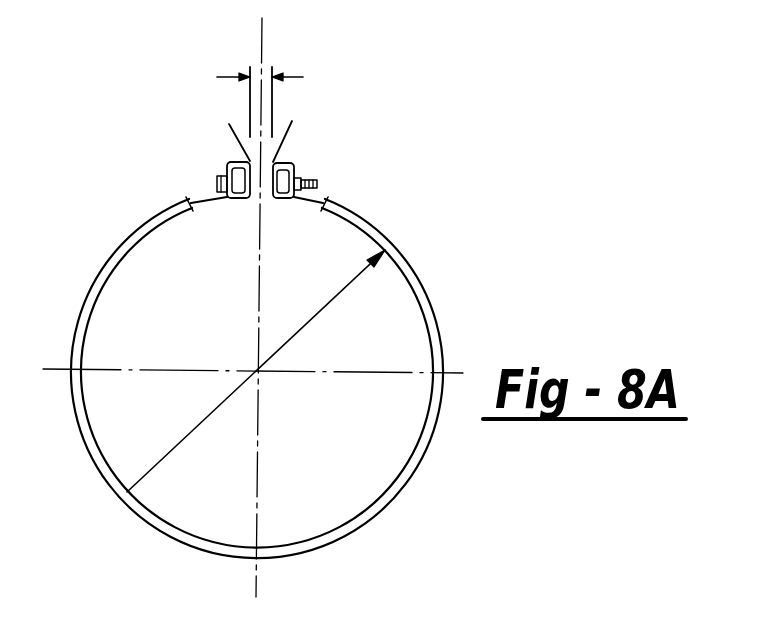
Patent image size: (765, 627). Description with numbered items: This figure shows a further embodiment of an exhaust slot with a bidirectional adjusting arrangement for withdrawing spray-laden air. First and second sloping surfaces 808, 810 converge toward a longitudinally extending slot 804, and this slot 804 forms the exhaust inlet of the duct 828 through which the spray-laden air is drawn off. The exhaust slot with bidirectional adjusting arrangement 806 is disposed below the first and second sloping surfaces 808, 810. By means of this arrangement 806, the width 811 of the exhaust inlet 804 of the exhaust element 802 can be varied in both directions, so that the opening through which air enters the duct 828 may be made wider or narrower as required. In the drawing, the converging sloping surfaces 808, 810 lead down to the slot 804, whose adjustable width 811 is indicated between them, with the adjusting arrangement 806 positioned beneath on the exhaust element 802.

The exhaust element 802 is at (422, 236).
The duct 828 is at (460, 304).
The longitudinally extending slot 804 is at (217, 166).
The exhaust slot with bidirectional adjusting arrangement 806 is at (338, 172).
The first sloping surface 808 is at (231, 124).
The second sloping surface 810 is at (293, 124).
The width of the exhaust inlet 811 is at (274, 60).